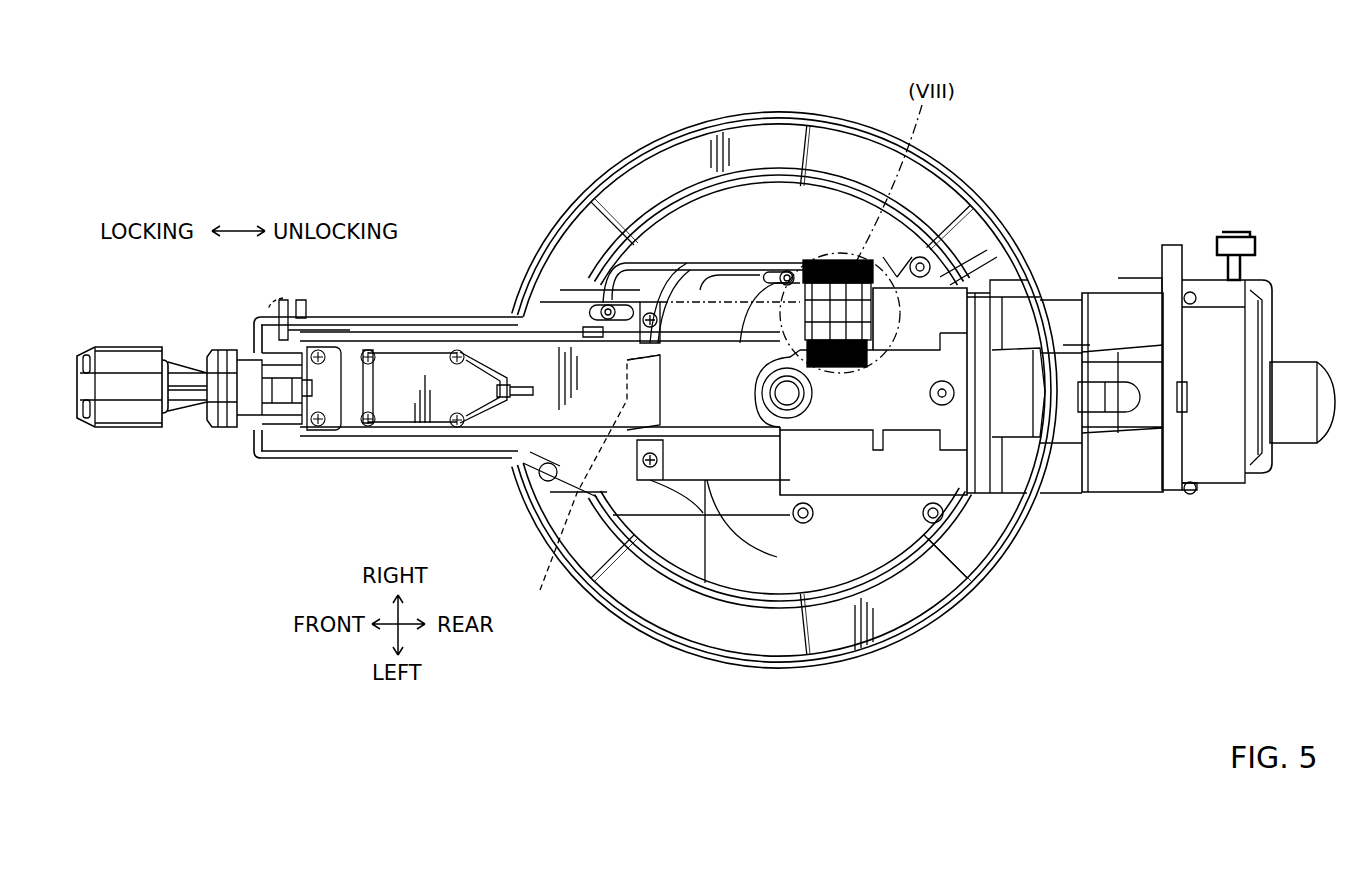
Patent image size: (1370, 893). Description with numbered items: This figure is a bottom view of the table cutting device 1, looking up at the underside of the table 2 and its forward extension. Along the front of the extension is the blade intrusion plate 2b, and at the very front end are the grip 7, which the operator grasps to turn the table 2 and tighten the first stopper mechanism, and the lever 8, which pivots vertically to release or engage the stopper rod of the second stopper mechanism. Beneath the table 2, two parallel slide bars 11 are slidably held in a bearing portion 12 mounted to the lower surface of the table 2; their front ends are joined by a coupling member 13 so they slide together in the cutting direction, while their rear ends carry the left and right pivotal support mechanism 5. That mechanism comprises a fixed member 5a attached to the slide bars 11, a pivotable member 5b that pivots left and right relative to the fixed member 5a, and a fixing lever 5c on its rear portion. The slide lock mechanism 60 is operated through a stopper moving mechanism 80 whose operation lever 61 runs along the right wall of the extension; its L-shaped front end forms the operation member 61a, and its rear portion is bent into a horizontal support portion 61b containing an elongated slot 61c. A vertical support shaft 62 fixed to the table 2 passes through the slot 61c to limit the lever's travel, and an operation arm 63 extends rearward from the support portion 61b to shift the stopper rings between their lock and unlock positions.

The table cutting device 1 is at (977, 139).
The table 2 is at (706, 116).
The blade intrusion plate 2b is at (360, 465).
The left and right pivotal support mechanism 5 is at (1208, 409).
The fixed member 5a is at (1127, 475).
The pivotable member 5b is at (1230, 320).
The fixing lever 5c is at (1290, 417).
The grip 7 is at (122, 355).
The lever 8 is at (210, 360).
The slide bars 11 is at (747, 463).
The bearing portion 12 is at (847, 470).
The coupling member 13 is at (585, 488).
The slide lock mechanism 60 is at (828, 258).
The operation lever 61 is at (497, 328).
The operation member 61a is at (305, 300).
The support portion 61b is at (650, 300).
The slot 61c is at (596, 297).
The support shaft 62 is at (615, 258).
The operation arm 63 is at (747, 280).
The stopper moving mechanism 80 is at (840, 214).